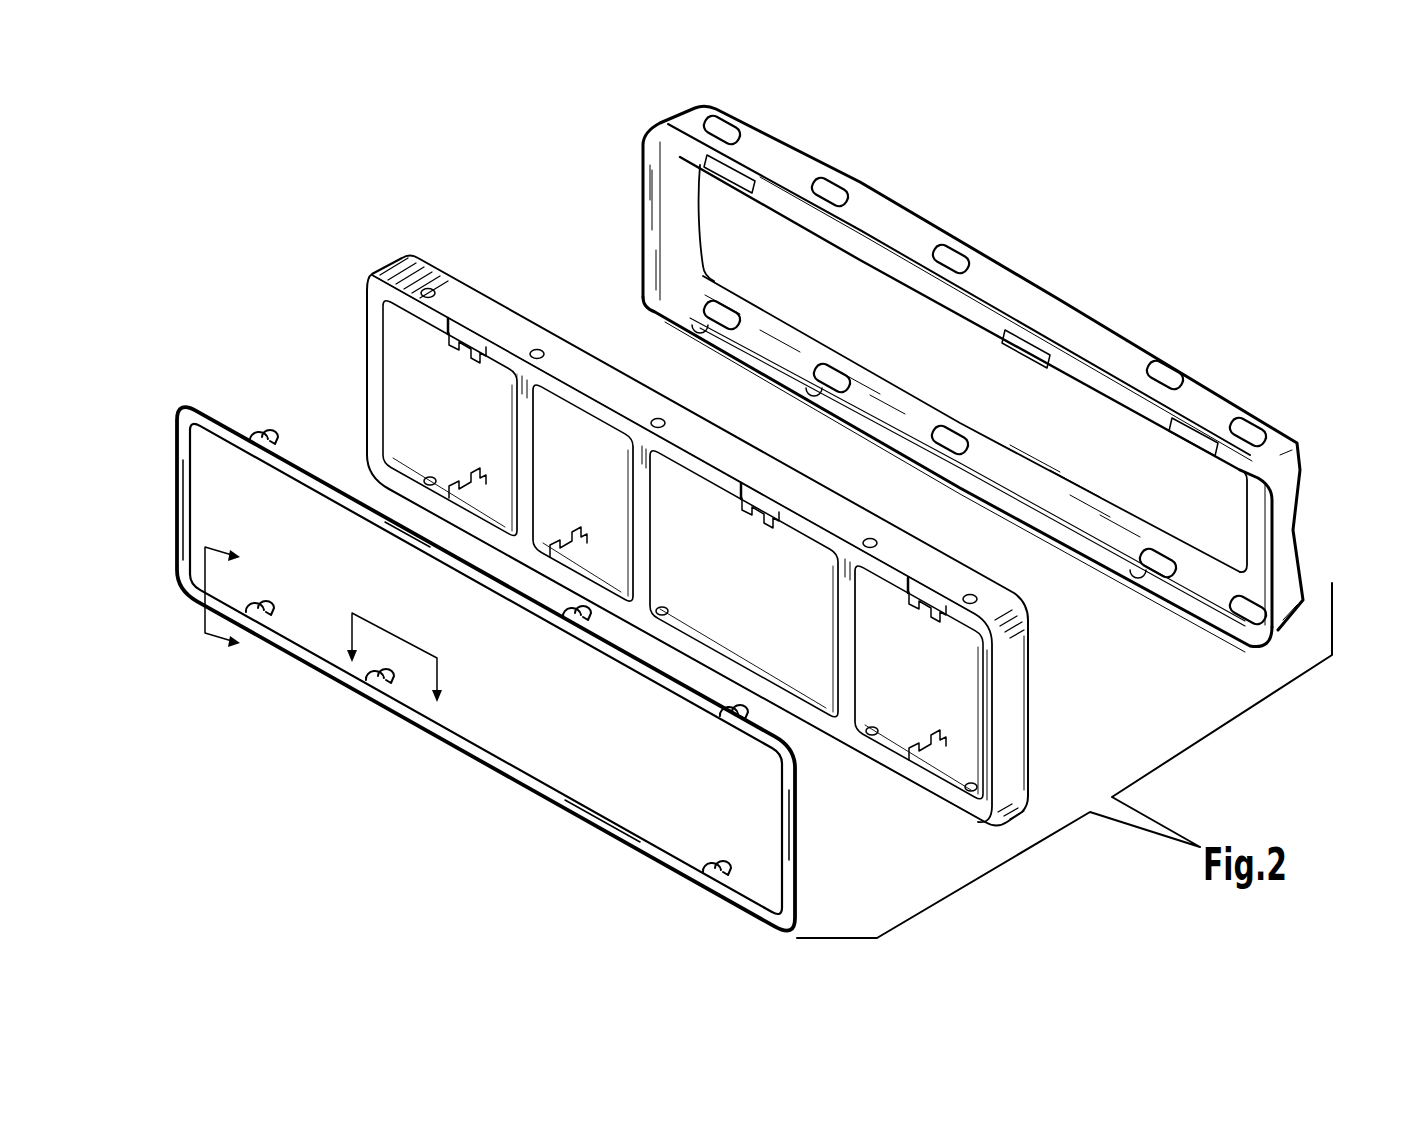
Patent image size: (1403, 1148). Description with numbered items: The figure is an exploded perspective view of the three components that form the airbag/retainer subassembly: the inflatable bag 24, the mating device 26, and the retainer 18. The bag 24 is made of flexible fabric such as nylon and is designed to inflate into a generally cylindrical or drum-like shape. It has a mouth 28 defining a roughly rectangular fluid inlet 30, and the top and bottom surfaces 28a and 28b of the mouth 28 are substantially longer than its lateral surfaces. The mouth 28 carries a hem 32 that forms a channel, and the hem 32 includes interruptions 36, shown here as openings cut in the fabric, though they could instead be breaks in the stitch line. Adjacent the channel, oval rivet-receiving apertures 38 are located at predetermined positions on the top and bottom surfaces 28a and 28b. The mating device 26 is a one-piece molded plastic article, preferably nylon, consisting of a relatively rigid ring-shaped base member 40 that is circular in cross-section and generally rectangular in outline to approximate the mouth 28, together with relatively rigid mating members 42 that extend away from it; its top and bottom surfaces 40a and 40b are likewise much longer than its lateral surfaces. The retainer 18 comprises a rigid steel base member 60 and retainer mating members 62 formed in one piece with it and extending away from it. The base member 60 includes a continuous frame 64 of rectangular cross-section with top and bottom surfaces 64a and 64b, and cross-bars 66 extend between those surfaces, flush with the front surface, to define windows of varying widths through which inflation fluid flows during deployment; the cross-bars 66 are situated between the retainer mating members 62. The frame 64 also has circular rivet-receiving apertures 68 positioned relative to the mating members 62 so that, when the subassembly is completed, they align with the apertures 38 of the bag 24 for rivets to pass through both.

The retainer 18 is at (395, 246).
The inflatable bag 24 is at (660, 108).
The mating device 26 is at (176, 398).
The mouth 28 is at (917, 222).
The top surface of the mouth 28a is at (988, 315).
The bottom surface of the mouth 28b is at (1097, 572).
The fluid inlet 30 is at (1011, 411).
The hem 32 is at (1088, 365).
The interruptions 36 is at (1220, 447).
The rivet-receiving apertures 38 is at (840, 185).
The base member 40 is at (802, 858).
The top surface of the base member 40a is at (322, 478).
The bottom surface of the base member 40b is at (532, 780).
The mating members 42 is at (262, 437).
The base member 60 is at (1034, 720).
The retainer mating members 62 is at (566, 556).
The continuous frame 64 is at (730, 548).
The top surface of the frame 64a is at (800, 493).
The bottom surface of the frame 64b is at (732, 650).
The cross-bars 66 is at (523, 458).
The rivet-receiving apertures 68 is at (668, 423).